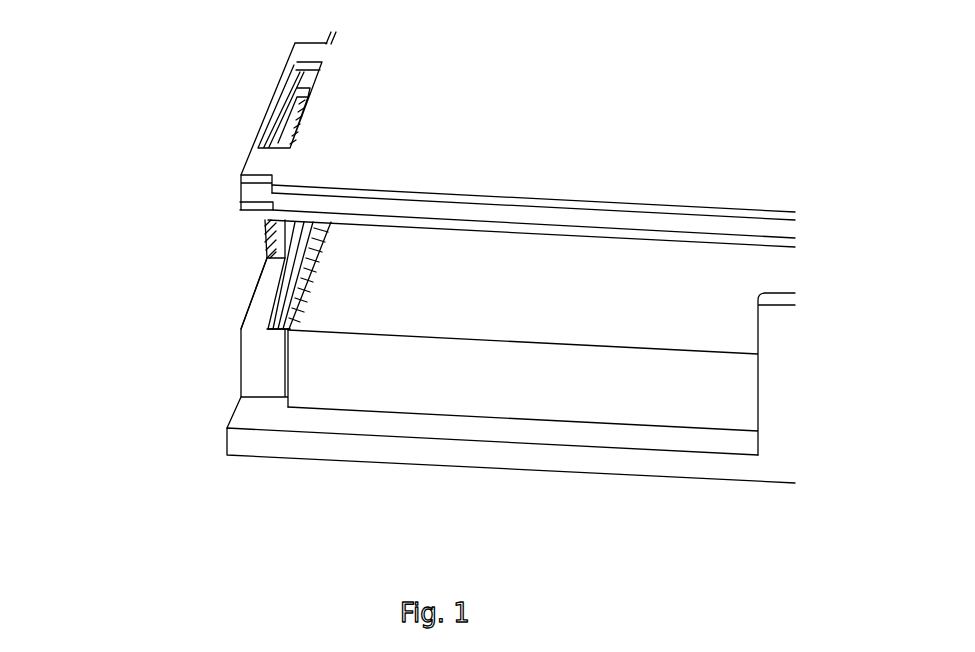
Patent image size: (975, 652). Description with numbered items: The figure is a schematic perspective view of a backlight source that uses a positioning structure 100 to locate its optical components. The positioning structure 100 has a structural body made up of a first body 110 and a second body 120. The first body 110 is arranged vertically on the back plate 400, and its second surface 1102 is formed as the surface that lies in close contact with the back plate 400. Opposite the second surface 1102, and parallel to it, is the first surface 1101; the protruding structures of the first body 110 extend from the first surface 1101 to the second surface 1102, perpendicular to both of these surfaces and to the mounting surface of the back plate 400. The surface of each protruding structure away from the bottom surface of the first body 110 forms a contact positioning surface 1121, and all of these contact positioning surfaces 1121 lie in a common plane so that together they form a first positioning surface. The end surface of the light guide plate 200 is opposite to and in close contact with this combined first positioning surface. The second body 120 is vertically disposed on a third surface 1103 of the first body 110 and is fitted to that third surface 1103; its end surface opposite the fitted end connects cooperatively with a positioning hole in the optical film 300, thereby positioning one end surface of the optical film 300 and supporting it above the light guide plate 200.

The positioning structure 100 is at (232, 335).
The first body 110 is at (268, 319).
The first surface 1101 is at (270, 318).
The second surface 1102 is at (252, 400).
The third surface 1103 is at (263, 277).
The second body 120 is at (265, 258).
The contact positioning surface 1121 is at (297, 297).
The light guide plate 200 is at (458, 388).
The optical film 300 is at (303, 158).
The back plate 400 is at (247, 417).